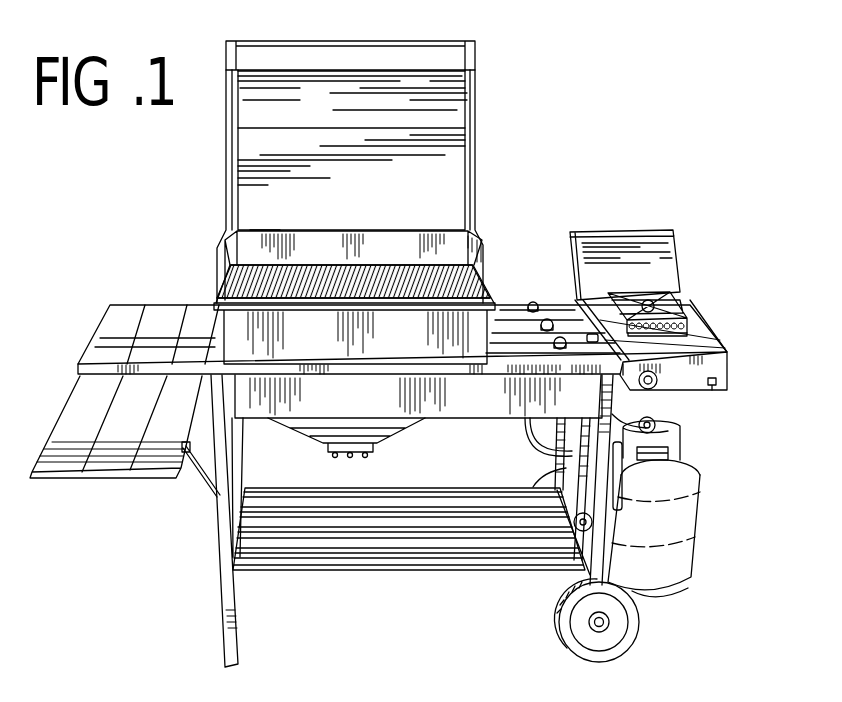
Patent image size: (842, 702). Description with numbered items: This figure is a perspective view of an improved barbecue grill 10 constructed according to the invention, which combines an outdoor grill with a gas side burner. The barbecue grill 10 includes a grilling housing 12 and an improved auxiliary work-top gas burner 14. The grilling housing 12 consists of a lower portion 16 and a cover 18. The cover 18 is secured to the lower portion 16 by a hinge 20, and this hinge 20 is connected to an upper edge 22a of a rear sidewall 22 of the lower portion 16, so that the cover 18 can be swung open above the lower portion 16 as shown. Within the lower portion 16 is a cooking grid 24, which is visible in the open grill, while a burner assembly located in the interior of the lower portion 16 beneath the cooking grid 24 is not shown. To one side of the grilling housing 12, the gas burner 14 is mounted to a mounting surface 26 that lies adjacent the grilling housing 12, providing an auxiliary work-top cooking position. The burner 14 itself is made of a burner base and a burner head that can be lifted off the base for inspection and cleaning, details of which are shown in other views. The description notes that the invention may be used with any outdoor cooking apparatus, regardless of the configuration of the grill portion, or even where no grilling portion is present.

The barbecue grill 10 is at (124, 283).
The grilling housing 12 is at (507, 201).
The auxiliary work-top gas burner 14 is at (670, 299).
The lower portion 16 is at (237, 347).
The cover 18 is at (476, 97).
The hinge 20 is at (261, 230).
The rear sidewall 22 is at (250, 249).
The upper edge 22a is at (313, 247).
The cooking grid 24 is at (404, 272).
The mounting surface 26 is at (693, 342).